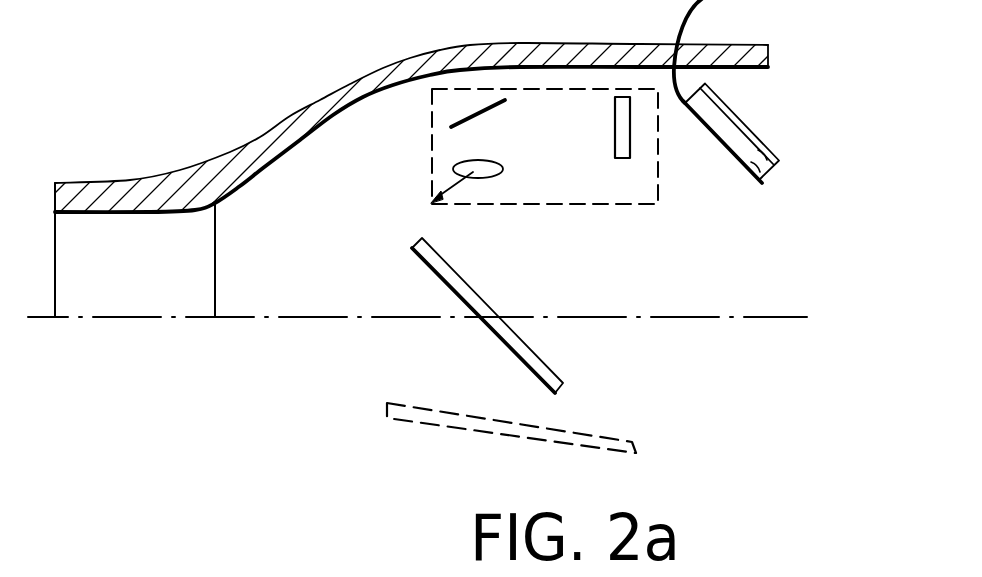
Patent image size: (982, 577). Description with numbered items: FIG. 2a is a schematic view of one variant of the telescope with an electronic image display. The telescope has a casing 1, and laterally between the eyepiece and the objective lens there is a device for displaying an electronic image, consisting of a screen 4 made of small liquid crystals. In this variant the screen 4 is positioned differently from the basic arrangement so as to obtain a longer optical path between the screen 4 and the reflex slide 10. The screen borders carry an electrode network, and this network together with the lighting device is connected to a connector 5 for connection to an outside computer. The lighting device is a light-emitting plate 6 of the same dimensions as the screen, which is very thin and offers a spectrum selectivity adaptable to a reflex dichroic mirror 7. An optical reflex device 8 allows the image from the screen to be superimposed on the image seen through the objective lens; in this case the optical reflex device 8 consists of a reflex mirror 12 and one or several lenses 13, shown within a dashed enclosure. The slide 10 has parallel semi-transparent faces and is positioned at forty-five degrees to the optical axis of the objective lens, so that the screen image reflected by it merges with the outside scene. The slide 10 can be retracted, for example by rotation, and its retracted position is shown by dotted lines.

The casing 1 is at (390, 70).
The screen 4 is at (764, 183).
The connector 5 is at (692, 21).
The light-emitting plate 6 is at (780, 160).
The reflex dichroic mirror 7 is at (757, 137).
The optical reflex device 8 is at (661, 207).
The slide 10 is at (597, 432).
The reflex mirror 12 is at (482, 108).
The lenses 13 is at (615, 123).